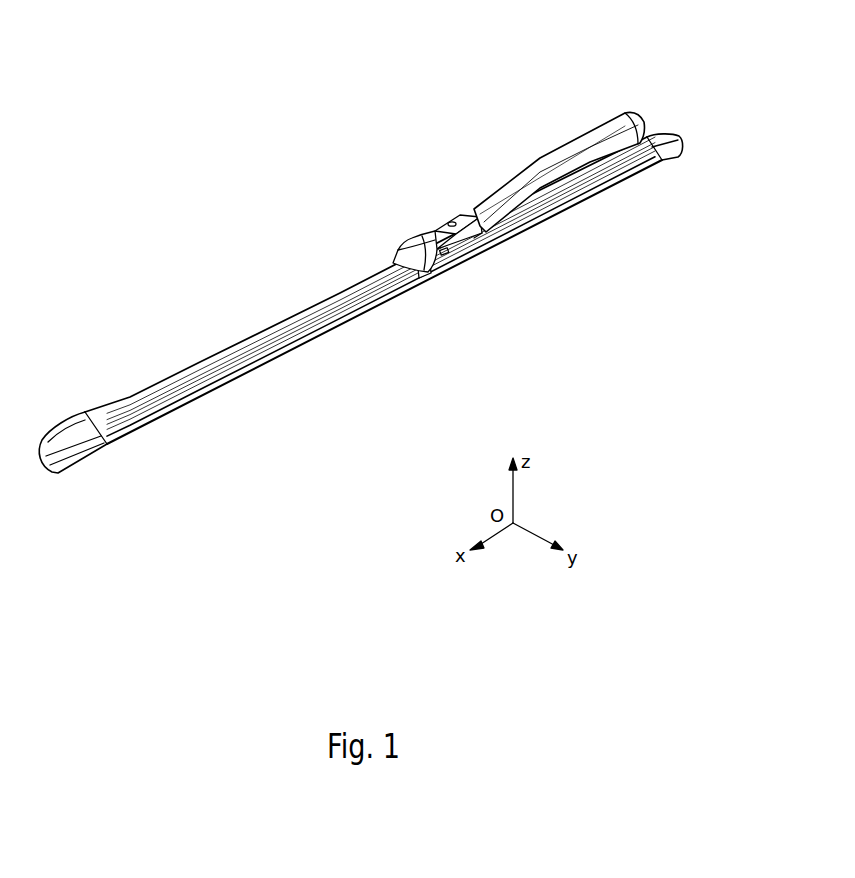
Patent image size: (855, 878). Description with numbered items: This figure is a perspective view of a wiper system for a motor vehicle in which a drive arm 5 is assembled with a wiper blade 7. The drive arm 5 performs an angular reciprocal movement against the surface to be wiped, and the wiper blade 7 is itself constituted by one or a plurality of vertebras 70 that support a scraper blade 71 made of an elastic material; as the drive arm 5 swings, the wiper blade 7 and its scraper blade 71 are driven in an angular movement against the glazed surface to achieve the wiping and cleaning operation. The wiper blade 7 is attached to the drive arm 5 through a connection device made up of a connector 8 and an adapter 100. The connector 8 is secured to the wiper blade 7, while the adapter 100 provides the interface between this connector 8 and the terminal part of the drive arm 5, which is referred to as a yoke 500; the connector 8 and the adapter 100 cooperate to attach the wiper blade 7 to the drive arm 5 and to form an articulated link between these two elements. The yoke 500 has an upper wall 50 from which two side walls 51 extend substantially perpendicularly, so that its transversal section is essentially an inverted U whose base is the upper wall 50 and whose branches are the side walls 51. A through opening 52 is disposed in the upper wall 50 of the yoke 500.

The drive arm 5 is at (547, 156).
The wiper blade 7 is at (360, 303).
The vertebra 70 is at (137, 390).
The scraper blade 71 is at (292, 358).
The connector 8 is at (427, 273).
The adapter 100 is at (429, 205).
The upper wall 50 is at (461, 205).
The yoke 500 is at (429, 222).
The side wall 51 is at (463, 240).
The through opening 52 is at (449, 214).